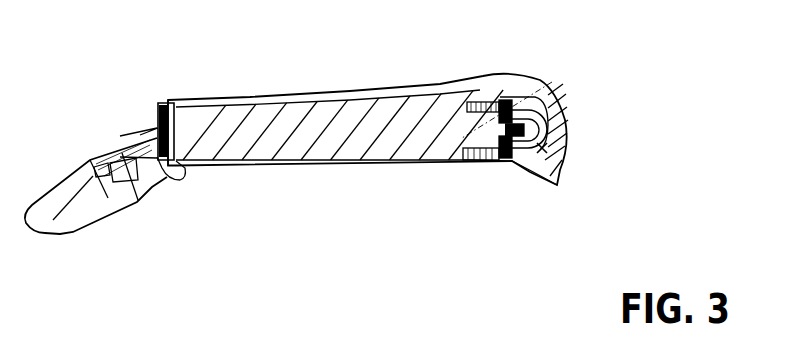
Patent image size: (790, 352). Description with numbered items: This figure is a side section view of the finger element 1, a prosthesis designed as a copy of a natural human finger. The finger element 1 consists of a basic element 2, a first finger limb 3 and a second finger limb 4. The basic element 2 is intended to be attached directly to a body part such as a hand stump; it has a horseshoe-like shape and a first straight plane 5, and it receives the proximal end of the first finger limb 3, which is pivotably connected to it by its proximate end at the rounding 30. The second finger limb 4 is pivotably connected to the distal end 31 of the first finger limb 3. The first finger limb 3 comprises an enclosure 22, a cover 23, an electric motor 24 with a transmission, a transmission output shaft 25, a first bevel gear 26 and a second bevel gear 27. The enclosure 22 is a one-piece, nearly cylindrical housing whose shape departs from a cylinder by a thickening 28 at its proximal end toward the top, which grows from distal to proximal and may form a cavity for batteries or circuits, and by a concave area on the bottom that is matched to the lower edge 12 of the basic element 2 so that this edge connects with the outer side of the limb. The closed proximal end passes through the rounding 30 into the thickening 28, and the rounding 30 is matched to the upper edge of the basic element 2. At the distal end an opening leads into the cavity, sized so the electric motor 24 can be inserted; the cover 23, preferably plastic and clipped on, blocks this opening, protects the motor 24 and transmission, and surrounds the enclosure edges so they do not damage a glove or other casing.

The finger element 1 is at (278, 181).
The basic element 2 is at (563, 90).
The first finger limb 3 is at (307, 97).
The second finger limb 4 is at (62, 177).
The first straight plane 5 is at (568, 118).
The lower edge 12 is at (533, 166).
The enclosure 22 is at (362, 166).
The cover 23 is at (158, 106).
The electric motor 24 is at (220, 110).
The transmission output shaft 25 is at (512, 110).
The first bevel gear 26 is at (502, 167).
The second bevel gear 27 is at (543, 148).
The thickening 28 is at (463, 92).
The rounding 30 is at (546, 97).
The distal end 31 is at (182, 176).